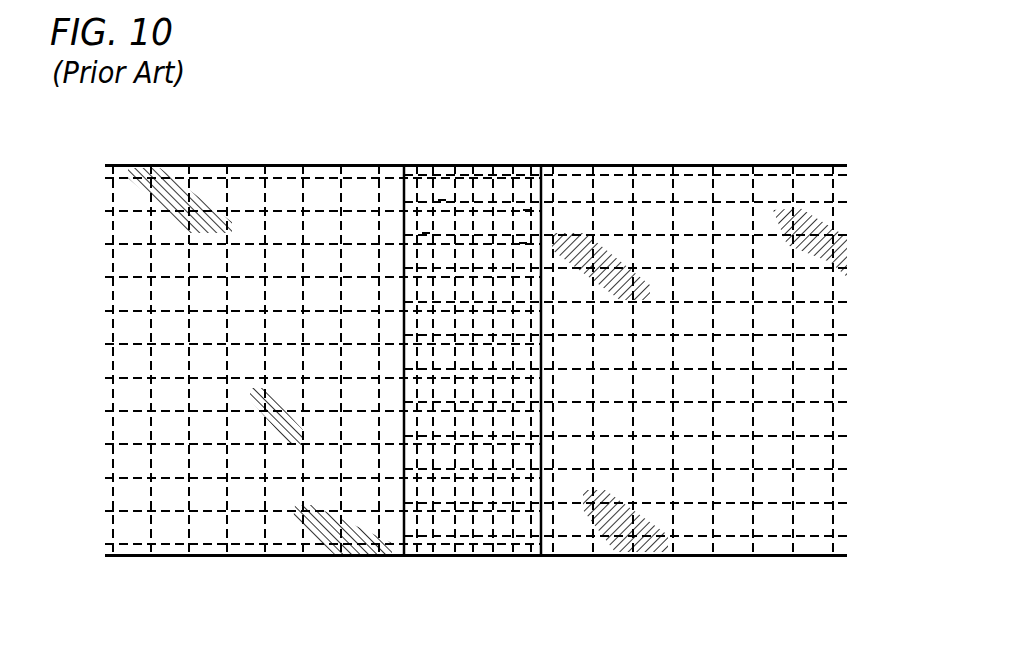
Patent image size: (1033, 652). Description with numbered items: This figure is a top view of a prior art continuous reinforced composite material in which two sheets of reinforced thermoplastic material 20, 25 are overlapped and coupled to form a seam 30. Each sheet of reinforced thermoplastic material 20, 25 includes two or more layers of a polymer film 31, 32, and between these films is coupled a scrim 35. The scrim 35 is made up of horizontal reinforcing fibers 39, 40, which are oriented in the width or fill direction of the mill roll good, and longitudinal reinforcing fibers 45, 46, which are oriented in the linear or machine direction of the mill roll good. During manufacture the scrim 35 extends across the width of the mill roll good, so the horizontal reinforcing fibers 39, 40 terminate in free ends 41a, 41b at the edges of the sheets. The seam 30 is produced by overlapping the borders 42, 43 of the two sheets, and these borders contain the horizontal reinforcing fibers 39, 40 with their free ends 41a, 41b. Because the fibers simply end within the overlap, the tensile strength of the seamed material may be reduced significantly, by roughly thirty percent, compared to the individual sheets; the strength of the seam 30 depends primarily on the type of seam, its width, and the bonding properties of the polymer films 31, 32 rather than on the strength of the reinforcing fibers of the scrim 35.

The sheet of reinforced thermoplastic material 20 is at (86, 331).
The sheet of reinforced thermoplastic material 25 is at (868, 394).
The seam 30 is at (486, 150).
The polymer film 31 is at (688, 165).
The polymer film 32 is at (293, 165).
The scrim 35 is at (835, 203).
The horizontal reinforcing fiber 39 is at (808, 336).
The horizontal reinforcing fiber 40 is at (142, 277).
The free end 41a is at (425, 233).
The free end 41b is at (521, 243).
The border 42 is at (541, 475).
The border 43 is at (404, 452).
The longitudinal reinforcing fiber 45 is at (832, 480).
The longitudinal reinforcing fiber 46 is at (110, 422).